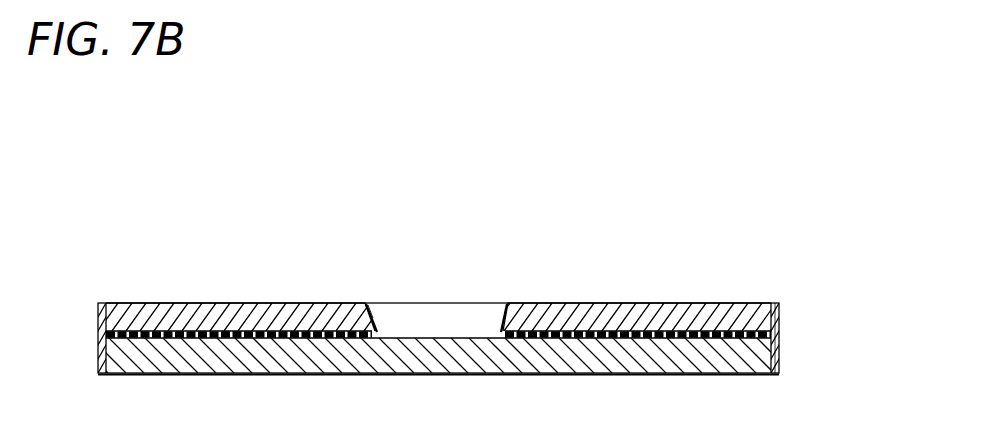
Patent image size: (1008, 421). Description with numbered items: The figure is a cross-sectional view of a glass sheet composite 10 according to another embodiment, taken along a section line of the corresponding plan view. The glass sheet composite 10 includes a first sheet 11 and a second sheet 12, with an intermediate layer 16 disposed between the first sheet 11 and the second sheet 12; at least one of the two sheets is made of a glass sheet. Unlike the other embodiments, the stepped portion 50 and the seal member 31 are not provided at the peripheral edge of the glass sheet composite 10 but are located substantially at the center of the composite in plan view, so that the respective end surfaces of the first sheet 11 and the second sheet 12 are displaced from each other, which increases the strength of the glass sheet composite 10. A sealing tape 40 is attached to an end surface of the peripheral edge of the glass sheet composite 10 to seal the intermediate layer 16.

The glass sheet composite 10 is at (822, 247).
The first sheet 11 is at (615, 318).
The second sheet 12 is at (752, 357).
The intermediate layer 16 is at (270, 331).
The seal member 31 is at (498, 307).
The sealing tape 40 is at (780, 313).
The stepped portion 50 is at (372, 302).